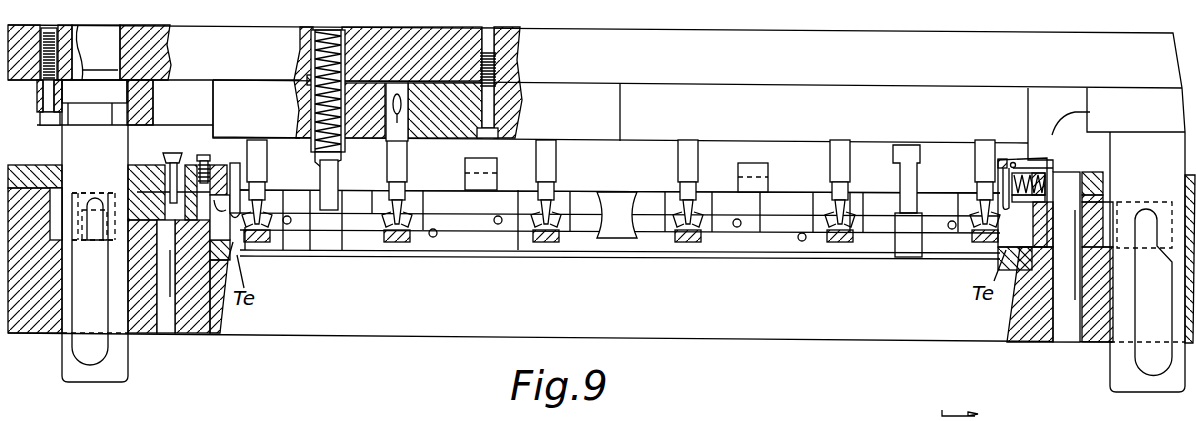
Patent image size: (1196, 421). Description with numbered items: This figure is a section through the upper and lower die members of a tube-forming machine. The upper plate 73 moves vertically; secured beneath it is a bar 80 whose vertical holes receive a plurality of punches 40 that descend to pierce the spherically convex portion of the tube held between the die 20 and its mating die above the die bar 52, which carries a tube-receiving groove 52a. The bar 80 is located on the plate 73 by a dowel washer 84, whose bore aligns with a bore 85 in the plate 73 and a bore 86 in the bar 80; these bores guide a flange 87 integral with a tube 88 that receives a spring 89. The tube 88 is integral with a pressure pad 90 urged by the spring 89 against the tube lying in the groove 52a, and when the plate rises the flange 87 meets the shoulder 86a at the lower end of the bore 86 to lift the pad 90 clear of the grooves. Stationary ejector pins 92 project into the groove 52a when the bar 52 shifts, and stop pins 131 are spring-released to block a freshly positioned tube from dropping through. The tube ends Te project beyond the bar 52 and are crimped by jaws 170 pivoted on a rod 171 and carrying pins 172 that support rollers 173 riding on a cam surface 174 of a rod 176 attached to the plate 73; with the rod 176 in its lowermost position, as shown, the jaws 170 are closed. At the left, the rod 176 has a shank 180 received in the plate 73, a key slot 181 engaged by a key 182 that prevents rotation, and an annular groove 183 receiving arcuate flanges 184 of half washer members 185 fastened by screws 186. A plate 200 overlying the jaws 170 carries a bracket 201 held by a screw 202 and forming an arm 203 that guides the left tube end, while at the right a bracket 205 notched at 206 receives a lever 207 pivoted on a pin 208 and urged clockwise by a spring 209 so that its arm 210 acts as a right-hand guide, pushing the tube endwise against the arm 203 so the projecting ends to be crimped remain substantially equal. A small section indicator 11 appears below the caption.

The section line 11 is at (971, 413).
The die 20 is at (277, 191).
The punch 40 is at (408, 156).
The die bar 52 is at (448, 188).
The groove 52a is at (358, 222).
The plate 73 is at (889, 78).
The bar 80 is at (212, 125).
The dowel washer 84 is at (313, 74).
The bore 85 is at (342, 56).
The bore 86 is at (303, 102).
The shoulder 86a is at (297, 127).
The flange 87 is at (292, 42).
The tube 88 is at (346, 61).
The spring 89 is at (290, 87).
The pressure pad 90 is at (331, 212).
The ejector pin 92 is at (288, 225).
The stop pin 131 is at (433, 238).
The jaw 170 is at (127, 200).
The rod 171 is at (170, 323).
The pin 172 is at (114, 244).
The roller 173 is at (100, 192).
The cam surface 174 is at (77, 343).
The rod 176 is at (62, 379).
The shank 180 is at (137, 47).
The key slot 181 is at (112, 63).
The key 182 is at (120, 53).
The annular groove 183 is at (88, 116).
The arcuate flange 184 is at (76, 103).
The half washer member 185 is at (37, 104).
The screw 186 is at (43, 125).
The plate 200 is at (149, 163).
The bracket 201 is at (239, 162).
The screw 202 is at (205, 161).
The arm 203 is at (238, 205).
The bracket 205 is at (1000, 158).
The notch 206 is at (1046, 155).
The lever 207 is at (1082, 122).
The pin 208 is at (1013, 166).
The spring 209 is at (1007, 202).
The arm 210 is at (1002, 227).